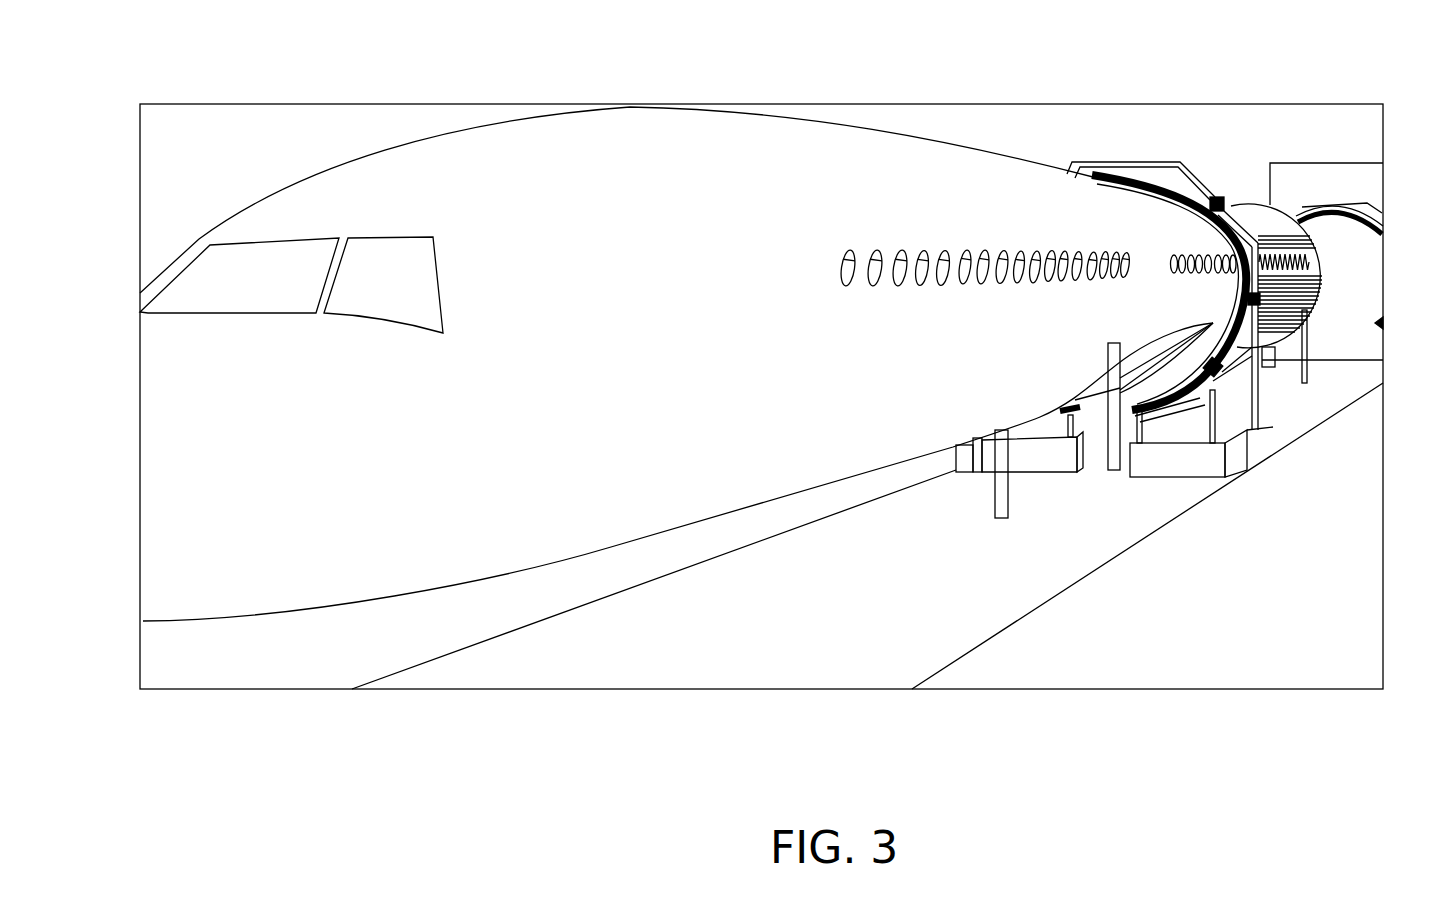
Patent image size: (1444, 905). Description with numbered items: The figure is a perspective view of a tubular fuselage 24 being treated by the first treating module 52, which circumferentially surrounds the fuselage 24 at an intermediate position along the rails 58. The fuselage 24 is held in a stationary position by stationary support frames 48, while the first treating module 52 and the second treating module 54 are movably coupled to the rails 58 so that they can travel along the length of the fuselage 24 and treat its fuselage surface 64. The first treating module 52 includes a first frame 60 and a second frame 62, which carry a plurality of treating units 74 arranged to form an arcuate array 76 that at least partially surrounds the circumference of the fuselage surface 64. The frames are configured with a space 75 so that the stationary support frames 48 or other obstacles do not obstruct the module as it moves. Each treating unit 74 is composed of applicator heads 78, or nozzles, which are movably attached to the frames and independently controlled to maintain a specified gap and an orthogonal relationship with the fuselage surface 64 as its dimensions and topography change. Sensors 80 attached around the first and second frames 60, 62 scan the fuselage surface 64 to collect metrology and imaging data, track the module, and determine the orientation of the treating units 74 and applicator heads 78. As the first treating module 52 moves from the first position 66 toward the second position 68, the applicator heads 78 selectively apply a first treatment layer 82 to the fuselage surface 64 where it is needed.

The fuselage 24 is at (418, 538).
The stationary support frames 48 is at (1002, 518).
The first treating module 52 is at (1128, 172).
The second treating module 54 is at (1372, 207).
The rails 58 is at (658, 580).
The first frame 60 is at (1183, 165).
The second frame 62 is at (1197, 397).
The fuselage surface 64 is at (572, 133).
The first position 66 is at (1308, 244).
The second position 68 is at (160, 480).
The treating units 74 is at (1278, 243).
The space 75 is at (1078, 428).
The arcuate array 76 is at (1093, 177).
The applicator heads 78 is at (1290, 327).
The sensors 80 is at (1220, 200).
The first treatment layer 82 is at (1297, 215).